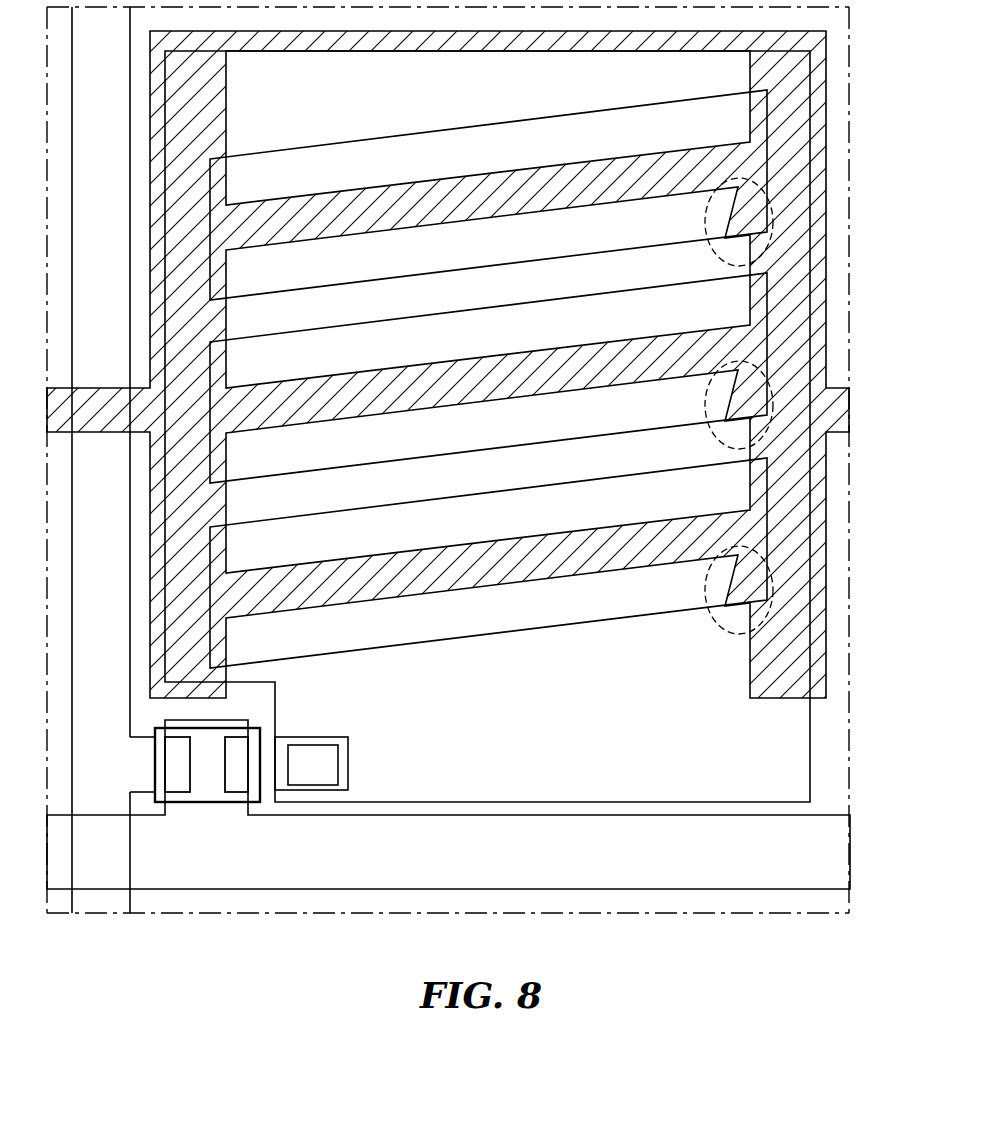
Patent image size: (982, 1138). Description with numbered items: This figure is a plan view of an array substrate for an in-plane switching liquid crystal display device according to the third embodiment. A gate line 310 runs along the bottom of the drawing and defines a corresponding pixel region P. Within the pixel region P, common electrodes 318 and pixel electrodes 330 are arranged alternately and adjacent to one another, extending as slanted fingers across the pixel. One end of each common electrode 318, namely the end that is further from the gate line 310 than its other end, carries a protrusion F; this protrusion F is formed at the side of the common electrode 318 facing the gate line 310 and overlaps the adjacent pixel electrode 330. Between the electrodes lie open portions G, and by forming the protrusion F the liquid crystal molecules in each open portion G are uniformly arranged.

The gate line 310 is at (851, 817).
The common electrode 318 is at (373, 220).
The pixel electrode 330 is at (503, 297).
The protrusion F is at (705, 236).
The open portion G is at (690, 578).
The pixel region P is at (829, 772).